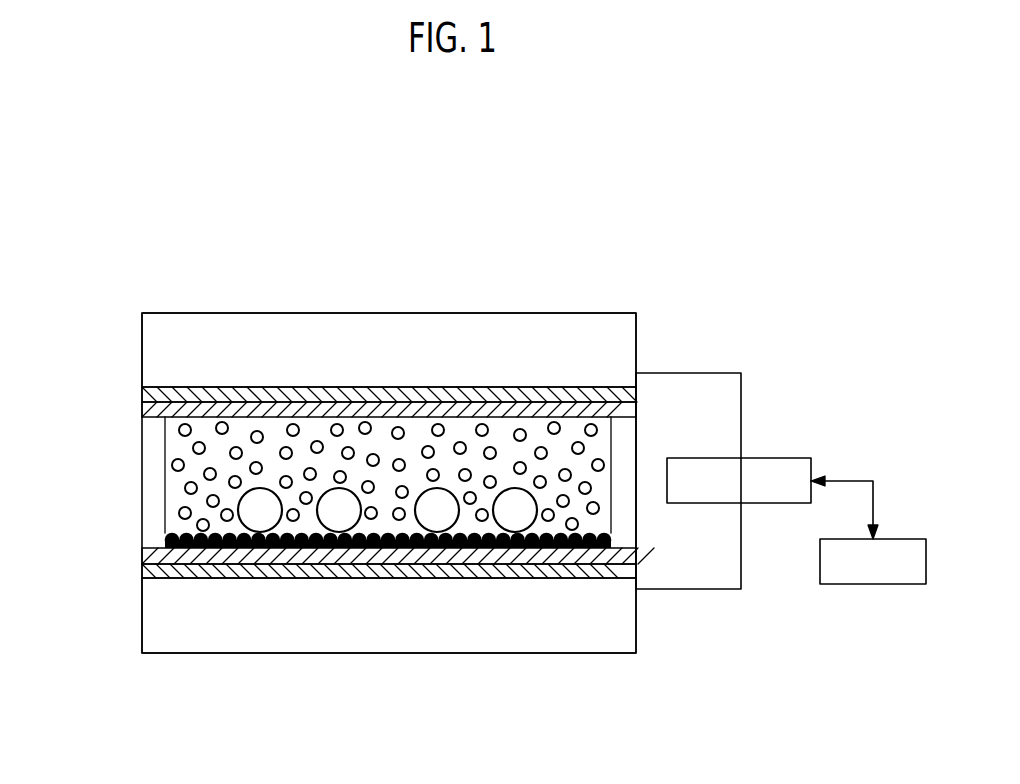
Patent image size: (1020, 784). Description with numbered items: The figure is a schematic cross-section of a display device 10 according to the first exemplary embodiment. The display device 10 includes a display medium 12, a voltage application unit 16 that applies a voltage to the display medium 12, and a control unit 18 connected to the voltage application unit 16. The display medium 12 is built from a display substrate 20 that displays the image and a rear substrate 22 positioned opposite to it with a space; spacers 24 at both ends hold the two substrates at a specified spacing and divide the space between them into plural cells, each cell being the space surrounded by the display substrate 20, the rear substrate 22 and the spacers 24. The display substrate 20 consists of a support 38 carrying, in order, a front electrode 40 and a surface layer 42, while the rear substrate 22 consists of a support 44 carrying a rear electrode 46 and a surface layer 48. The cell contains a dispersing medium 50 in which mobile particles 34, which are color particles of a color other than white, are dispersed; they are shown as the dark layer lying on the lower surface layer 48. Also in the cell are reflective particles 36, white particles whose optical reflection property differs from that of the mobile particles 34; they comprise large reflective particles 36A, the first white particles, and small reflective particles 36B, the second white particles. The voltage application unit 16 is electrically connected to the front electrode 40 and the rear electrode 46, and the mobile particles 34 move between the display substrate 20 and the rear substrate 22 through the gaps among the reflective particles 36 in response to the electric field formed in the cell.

The display device 10 is at (512, 242).
The display medium 12 is at (580, 312).
The voltage application unit 16 is at (780, 458).
The control unit 18 is at (876, 586).
The display substrate 20 is at (70, 318).
The rear substrate 22 is at (70, 542).
The spacers 24 is at (150, 503).
The mobile particles 34 is at (362, 549).
The reflective particles 36 is at (595, 723).
The large reflective particles 36A is at (443, 513).
The small reflective particles 36B is at (548, 520).
The support 38 is at (148, 338).
The front electrode 40 is at (142, 393).
The surface layer 42 is at (142, 409).
The support 44 is at (155, 626).
The rear electrode 46 is at (143, 571).
The surface layer 48 is at (143, 554).
The dispersing medium 50 is at (590, 523).